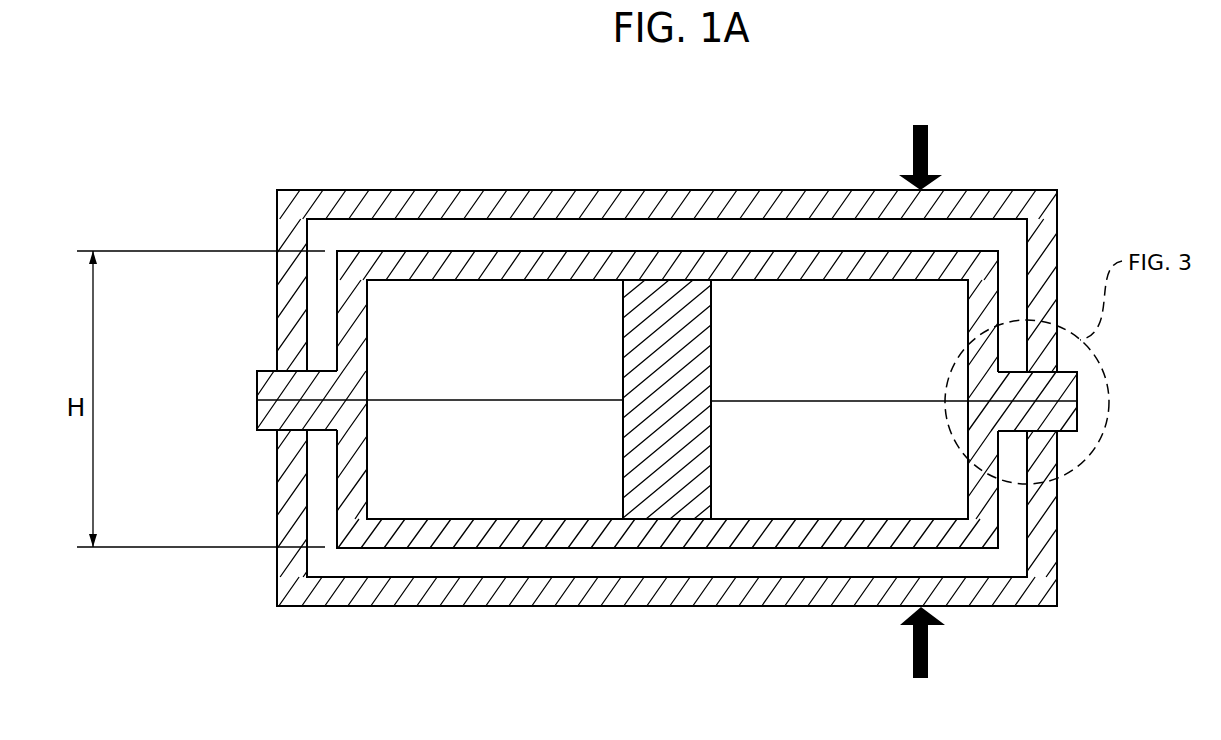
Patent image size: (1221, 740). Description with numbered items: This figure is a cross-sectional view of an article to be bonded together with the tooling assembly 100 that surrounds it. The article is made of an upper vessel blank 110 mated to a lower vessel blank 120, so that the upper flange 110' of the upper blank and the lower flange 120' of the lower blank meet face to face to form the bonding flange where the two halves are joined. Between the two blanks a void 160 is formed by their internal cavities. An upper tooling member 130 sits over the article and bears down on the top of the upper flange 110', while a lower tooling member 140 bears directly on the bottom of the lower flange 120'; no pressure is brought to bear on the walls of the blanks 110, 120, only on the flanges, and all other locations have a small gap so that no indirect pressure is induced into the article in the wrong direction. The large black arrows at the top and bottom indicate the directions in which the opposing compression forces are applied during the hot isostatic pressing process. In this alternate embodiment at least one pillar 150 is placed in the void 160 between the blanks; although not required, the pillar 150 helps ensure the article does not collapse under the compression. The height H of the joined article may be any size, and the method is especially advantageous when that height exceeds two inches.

The battery module assembly 100 is at (1028, 148).
The upper vessel blank 110 is at (667, 235).
The upper flange 110' is at (248, 354).
The lower vessel blank 120 is at (662, 556).
The lower flange 120' is at (248, 414).
The upper tooling member 130 is at (378, 200).
The lower tooling member 140 is at (430, 598).
The pillar 150 is at (675, 297).
The void 160 is at (815, 315).